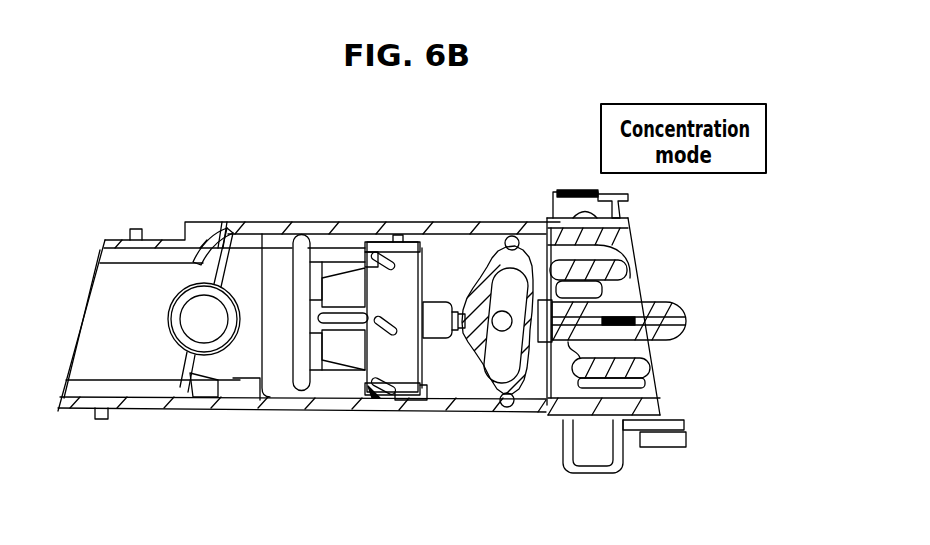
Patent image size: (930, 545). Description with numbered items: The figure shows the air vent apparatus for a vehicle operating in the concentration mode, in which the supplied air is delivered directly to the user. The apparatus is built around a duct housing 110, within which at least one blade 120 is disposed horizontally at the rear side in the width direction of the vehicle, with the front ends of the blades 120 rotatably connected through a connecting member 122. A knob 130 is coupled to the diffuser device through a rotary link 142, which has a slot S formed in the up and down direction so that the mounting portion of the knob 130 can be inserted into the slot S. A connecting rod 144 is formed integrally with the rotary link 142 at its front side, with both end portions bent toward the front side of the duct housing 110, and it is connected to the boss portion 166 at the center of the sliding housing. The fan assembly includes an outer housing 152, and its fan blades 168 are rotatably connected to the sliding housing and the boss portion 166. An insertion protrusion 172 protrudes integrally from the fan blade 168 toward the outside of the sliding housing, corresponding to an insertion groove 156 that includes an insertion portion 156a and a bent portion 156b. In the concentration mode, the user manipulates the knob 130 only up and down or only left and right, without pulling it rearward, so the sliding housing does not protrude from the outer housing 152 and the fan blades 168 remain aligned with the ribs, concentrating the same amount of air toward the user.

The duct housing 110 is at (264, 231).
The blade 120 is at (605, 320).
The connecting member 122 is at (543, 250).
The knob 130 is at (668, 311).
The rotary link 142 is at (505, 398).
The connecting rod 144 is at (465, 333).
The outer housing 152 is at (395, 355).
The insertion groove 156 is at (373, 476).
The insertion portion 156a is at (336, 340).
The bent portion 156b is at (378, 380).
The boss portion 166 is at (441, 337).
The fan blade 168 is at (240, 398).
The insertion protrusion 172 is at (373, 240).
The slot S is at (516, 291).